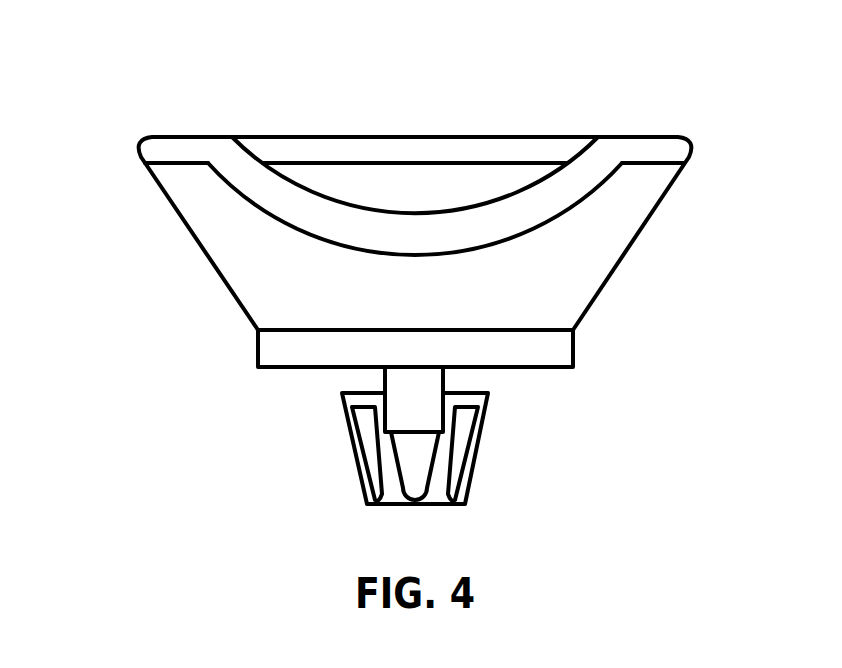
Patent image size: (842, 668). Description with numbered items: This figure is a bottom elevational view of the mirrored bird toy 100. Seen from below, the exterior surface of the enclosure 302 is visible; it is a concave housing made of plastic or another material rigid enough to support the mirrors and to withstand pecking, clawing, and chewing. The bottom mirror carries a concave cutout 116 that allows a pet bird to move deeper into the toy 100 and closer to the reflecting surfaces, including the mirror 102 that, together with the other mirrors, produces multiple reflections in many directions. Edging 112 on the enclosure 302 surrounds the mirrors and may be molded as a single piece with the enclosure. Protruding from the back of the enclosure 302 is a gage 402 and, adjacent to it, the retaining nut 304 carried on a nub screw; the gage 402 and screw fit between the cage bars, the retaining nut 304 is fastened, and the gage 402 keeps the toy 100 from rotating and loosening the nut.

The bird toy 100 is at (711, 82).
The mirror 102 is at (391, 193).
The edging 112 is at (148, 147).
The concave cutout 116 is at (240, 118).
The enclosure 302 is at (215, 282).
The retaining nut 304 is at (480, 437).
The gage 402 is at (385, 378).